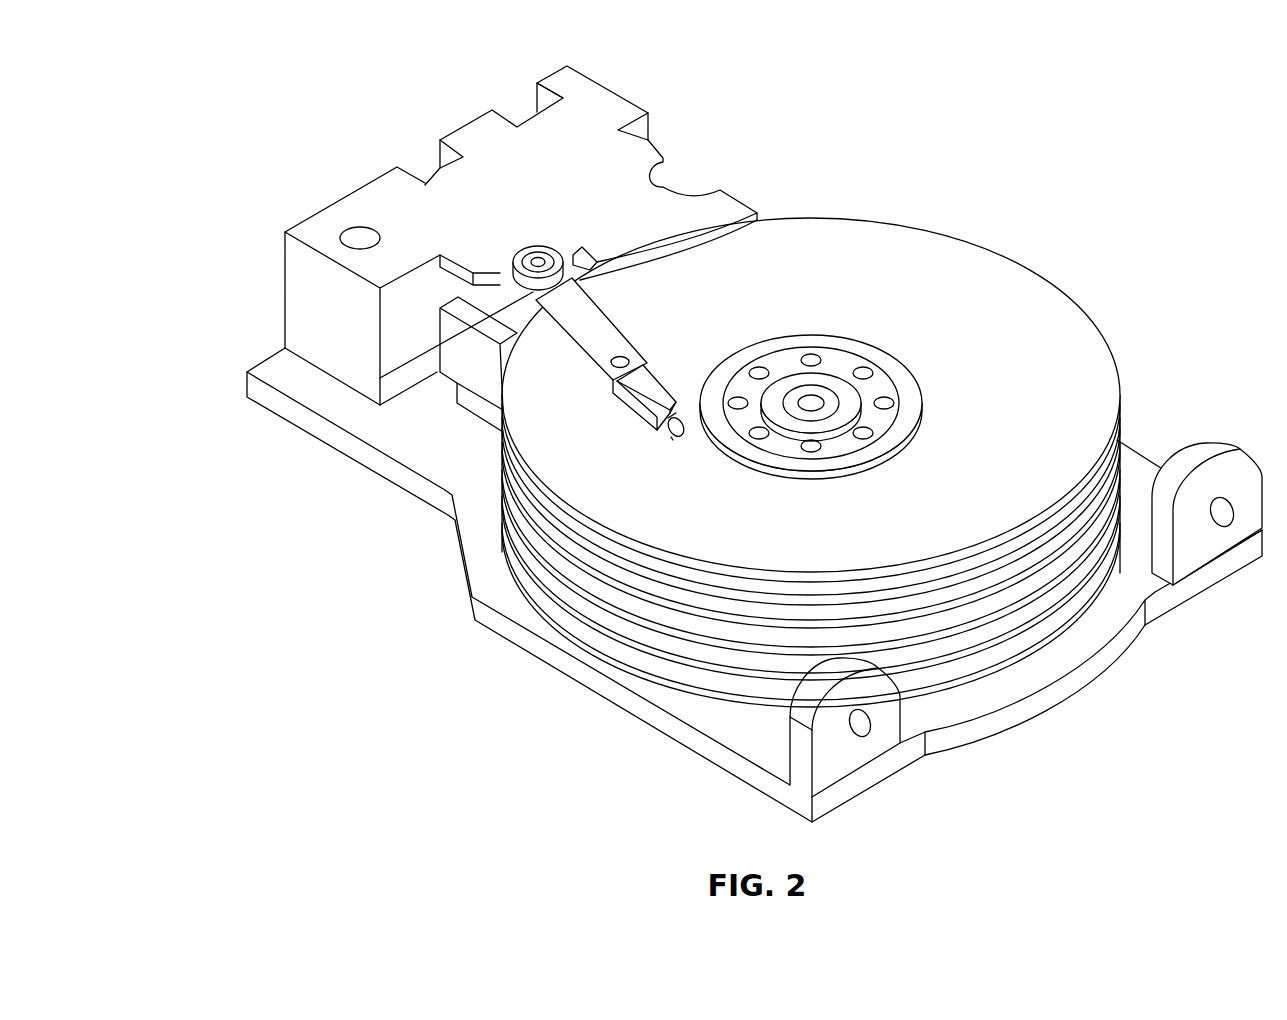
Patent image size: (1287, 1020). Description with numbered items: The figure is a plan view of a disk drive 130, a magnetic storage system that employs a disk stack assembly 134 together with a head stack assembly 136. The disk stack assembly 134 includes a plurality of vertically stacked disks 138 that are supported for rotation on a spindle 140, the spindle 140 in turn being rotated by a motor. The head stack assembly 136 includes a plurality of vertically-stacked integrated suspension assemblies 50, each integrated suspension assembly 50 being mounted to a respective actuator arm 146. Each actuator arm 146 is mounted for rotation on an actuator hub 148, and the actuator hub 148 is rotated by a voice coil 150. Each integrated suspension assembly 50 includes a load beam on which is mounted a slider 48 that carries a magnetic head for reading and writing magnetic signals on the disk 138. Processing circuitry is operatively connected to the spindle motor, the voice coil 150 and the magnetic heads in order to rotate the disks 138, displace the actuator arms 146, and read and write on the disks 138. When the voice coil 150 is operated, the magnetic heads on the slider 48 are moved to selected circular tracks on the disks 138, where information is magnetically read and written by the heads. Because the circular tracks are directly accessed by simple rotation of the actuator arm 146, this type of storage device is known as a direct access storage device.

The disk drive 130 is at (1160, 283).
The disk stack assembly 134 is at (988, 250).
The head stack assembly 136 is at (380, 378).
The disks 138 is at (993, 647).
The spindle 140 is at (813, 400).
The actuator arm 146 is at (600, 318).
The actuator hub 148 is at (538, 262).
The voice coil 150 is at (482, 128).
The integrated suspension assembly 50 is at (662, 385).
The slider 48 is at (673, 440).